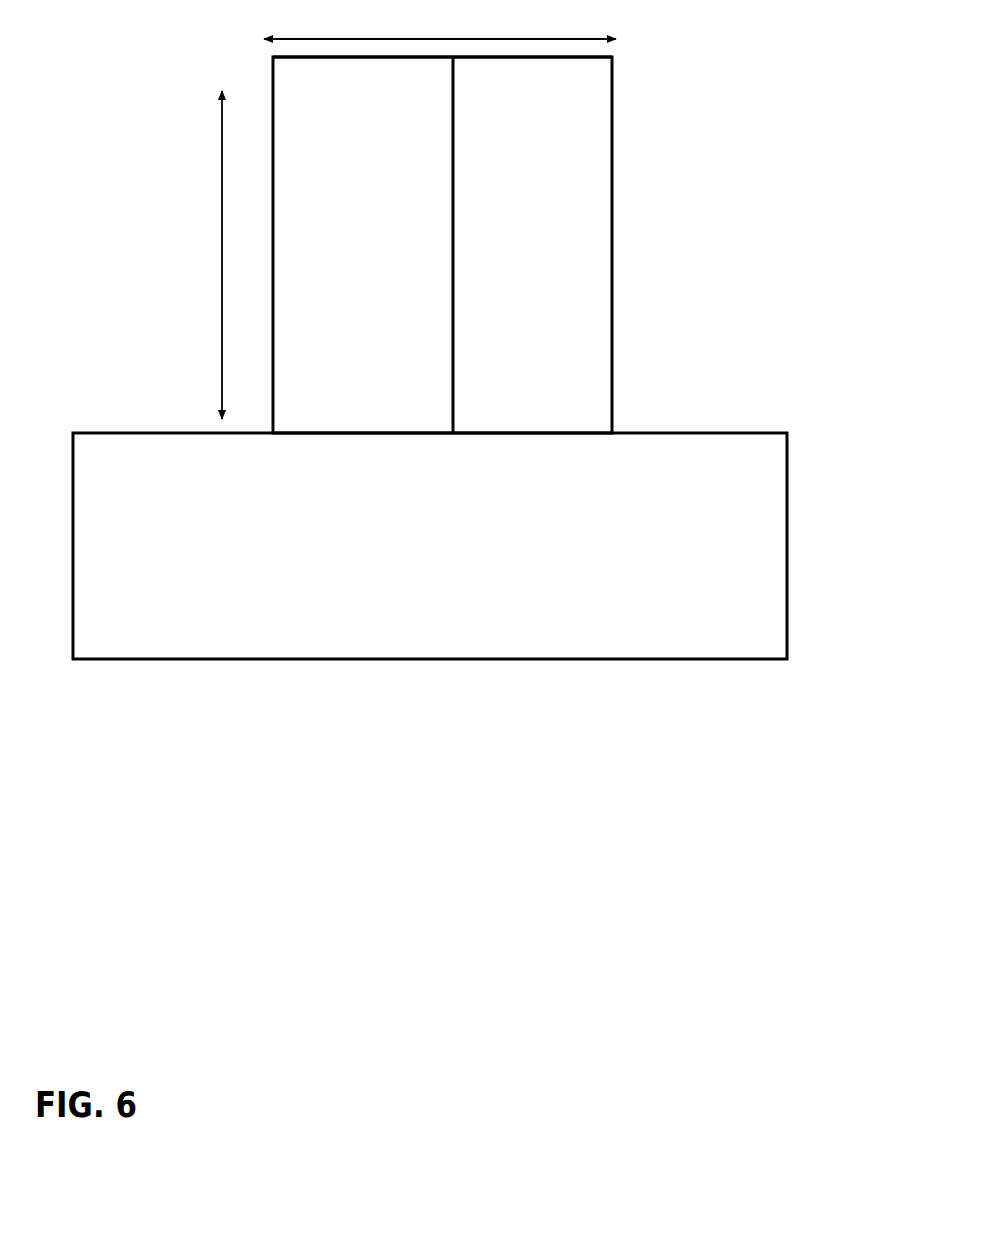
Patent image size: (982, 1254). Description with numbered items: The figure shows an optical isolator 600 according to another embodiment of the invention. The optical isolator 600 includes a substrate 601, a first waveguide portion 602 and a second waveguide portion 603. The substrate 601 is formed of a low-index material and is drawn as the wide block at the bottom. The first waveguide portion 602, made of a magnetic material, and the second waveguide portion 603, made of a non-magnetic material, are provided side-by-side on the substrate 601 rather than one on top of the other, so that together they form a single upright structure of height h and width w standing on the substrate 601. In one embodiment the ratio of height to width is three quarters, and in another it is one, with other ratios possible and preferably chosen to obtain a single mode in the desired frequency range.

The optical isolator 600 is at (480, 412).
The substrate 601 is at (803, 562).
The first waveguide portion 602 is at (652, 353).
The second waveguide portion 603 is at (265, 70).